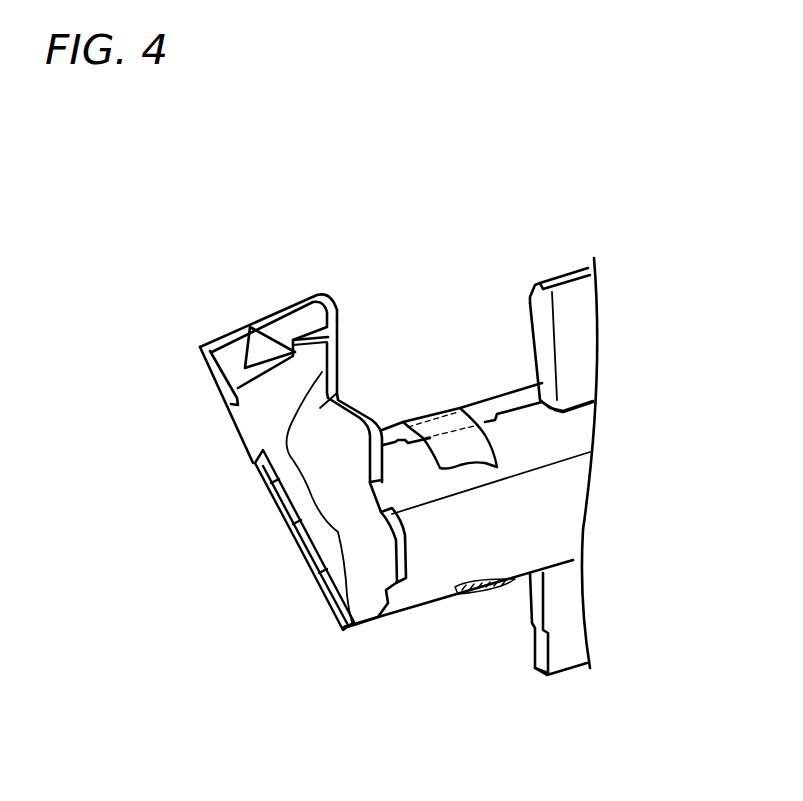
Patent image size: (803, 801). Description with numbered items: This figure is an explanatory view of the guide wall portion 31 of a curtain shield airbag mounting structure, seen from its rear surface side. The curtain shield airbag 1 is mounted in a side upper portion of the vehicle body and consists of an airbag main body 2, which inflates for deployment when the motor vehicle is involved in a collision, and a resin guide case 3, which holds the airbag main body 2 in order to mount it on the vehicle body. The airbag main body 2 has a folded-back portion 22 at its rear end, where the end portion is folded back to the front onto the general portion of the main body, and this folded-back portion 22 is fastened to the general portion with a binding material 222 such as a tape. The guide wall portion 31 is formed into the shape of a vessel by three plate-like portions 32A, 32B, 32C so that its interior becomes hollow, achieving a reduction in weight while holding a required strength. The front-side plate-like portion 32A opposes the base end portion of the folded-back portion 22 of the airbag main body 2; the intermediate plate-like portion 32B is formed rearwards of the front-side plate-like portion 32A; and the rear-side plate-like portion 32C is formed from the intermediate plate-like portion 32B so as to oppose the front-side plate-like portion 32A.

The curtain shield airbag 1 is at (497, 645).
The airbag main body 2 is at (478, 395).
The folded-back portion 22 is at (500, 400).
The binding material 222 is at (432, 415).
The resin guide case 3 is at (557, 528).
The guide wall portion 31 is at (187, 343).
The front-side plate-like portion 32A is at (337, 393).
The intermediate plate-like portion 32B is at (290, 459).
The rear-side plate-like portion 32C is at (293, 540).